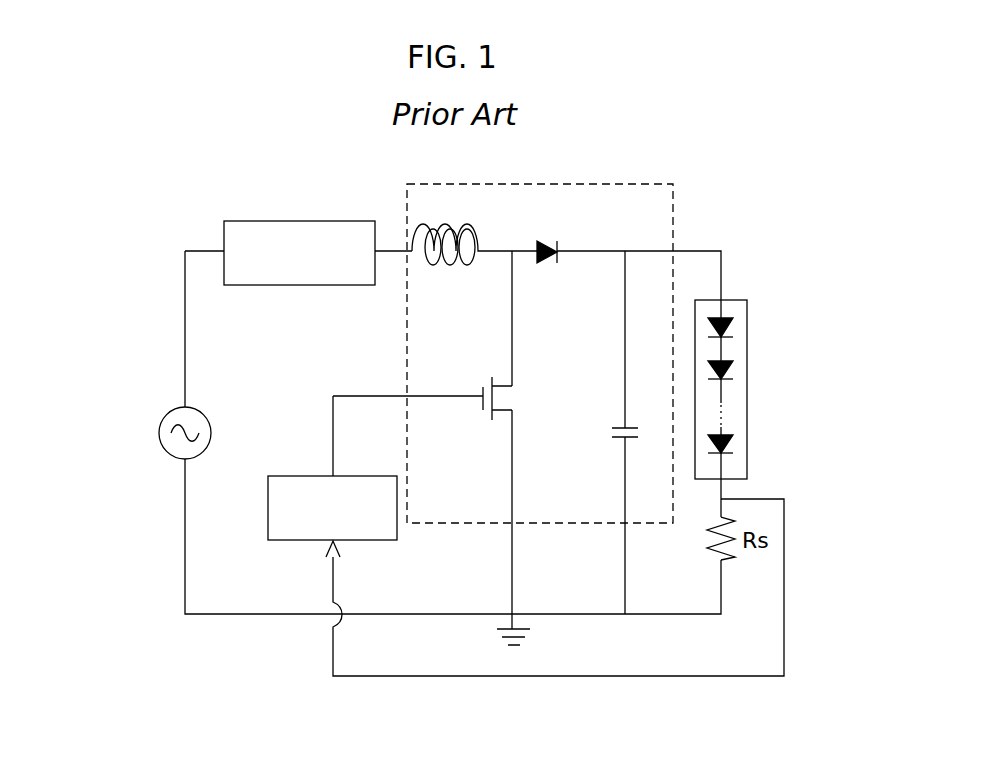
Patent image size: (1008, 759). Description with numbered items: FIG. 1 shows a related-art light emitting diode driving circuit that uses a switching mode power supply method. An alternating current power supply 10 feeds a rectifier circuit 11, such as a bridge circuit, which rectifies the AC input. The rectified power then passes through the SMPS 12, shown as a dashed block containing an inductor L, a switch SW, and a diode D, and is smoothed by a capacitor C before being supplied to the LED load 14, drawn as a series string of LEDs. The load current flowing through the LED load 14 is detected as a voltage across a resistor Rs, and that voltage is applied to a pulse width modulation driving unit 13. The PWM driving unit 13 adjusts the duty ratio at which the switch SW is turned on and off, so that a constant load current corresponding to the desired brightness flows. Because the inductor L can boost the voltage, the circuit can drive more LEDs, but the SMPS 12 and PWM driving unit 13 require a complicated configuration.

The alternating current (AC) power supply 10 is at (130, 433).
The rectifier circuit 11 is at (299, 253).
The SMPS 12 is at (673, 222).
The pulse width modulation (PWM) driving unit 13 is at (332, 468).
The LED load 14 is at (772, 389).